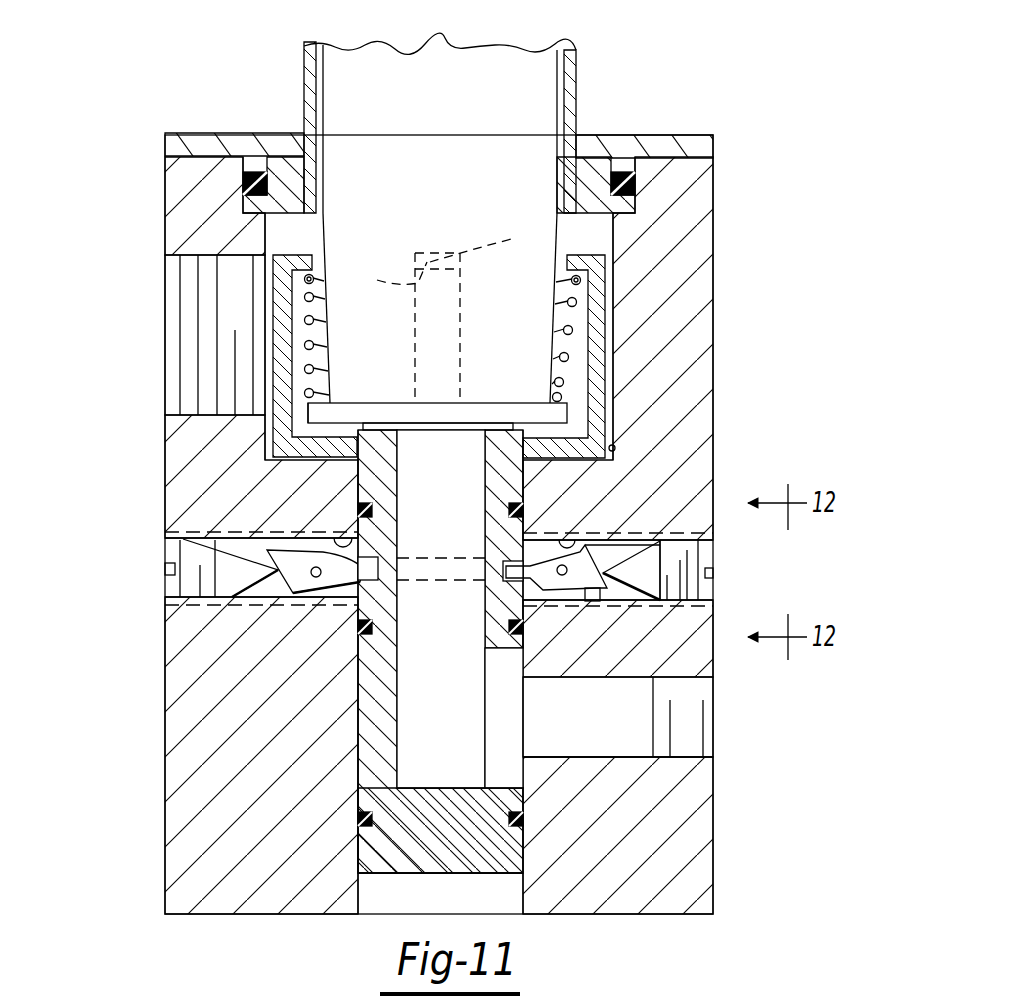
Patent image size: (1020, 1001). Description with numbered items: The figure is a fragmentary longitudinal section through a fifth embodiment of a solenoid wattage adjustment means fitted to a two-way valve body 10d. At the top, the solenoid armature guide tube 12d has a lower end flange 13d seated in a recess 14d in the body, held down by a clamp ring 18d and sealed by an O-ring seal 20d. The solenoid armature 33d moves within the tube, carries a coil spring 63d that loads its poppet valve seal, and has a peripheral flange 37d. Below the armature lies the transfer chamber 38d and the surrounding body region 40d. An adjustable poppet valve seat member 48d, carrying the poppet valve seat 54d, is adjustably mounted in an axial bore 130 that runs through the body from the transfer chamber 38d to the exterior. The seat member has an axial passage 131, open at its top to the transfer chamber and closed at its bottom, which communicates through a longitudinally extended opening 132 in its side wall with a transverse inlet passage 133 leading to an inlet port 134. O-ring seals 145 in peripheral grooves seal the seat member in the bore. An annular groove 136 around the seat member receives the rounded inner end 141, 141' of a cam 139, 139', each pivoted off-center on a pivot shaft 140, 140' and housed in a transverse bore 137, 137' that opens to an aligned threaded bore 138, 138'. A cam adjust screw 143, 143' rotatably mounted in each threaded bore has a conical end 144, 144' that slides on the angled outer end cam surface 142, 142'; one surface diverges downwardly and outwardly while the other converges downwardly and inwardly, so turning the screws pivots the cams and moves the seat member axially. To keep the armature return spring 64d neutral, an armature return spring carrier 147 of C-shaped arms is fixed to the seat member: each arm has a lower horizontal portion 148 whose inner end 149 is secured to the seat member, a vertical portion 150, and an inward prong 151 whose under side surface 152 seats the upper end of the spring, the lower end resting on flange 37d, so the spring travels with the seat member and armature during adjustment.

The valve body 10d is at (176, 774).
The solenoid armature guide tube 12d is at (582, 95).
The lower end flange 13d is at (598, 178).
The recess 14d is at (700, 206).
The clamp ring 18d is at (700, 150).
The O-ring seal 20d is at (627, 185).
The solenoid armature 33d is at (518, 62).
The armature peripheral flange 37d is at (300, 416).
The transfer chamber 38d is at (625, 447).
The chamber 40d is at (195, 256).
The adjustable poppet valve seat member 48d is at (533, 488).
The poppet valve seat 54d is at (482, 426).
The coil spring 63d is at (423, 440).
The armature return spring 64d is at (552, 328).
The axial bore 130 is at (358, 690).
The axial passage 131 is at (372, 725).
The longitudinally extended opening 132 is at (513, 790).
The transverse inlet passage 133 is at (585, 748).
The inlet port 134 is at (690, 680).
The annular groove 136 is at (428, 578).
The transverse bore 137 is at (588, 536).
The transverse bore 137' is at (315, 550).
The threaded bore 138 is at (645, 569).
The threaded bore 138' is at (223, 568).
The cam 139 is at (630, 596).
The cam 139' is at (230, 543).
The pivot shaft 140 is at (571, 608).
The pivot shaft 140' is at (283, 631).
The rounded inner end 141 is at (551, 551).
The rounded inner end 141' is at (336, 598).
The angled outer end cam surface 142 is at (637, 527).
The angled outer end cam surface 142' is at (285, 628).
The cam adjust screw 143 is at (737, 586).
The cam adjust screw 143' is at (129, 592).
The conical end 144 is at (676, 596).
The conical end 144' is at (172, 603).
The O-ring seals 145 is at (362, 509).
The armature return spring carrier 147 is at (615, 330).
The lower horizontal retainer arm portion 148 is at (328, 447).
The inner end 149 is at (372, 428).
The vertical retainer arm portion 150 is at (275, 338).
The prong 151 is at (290, 262).
The under side surfaces 152 is at (312, 280).